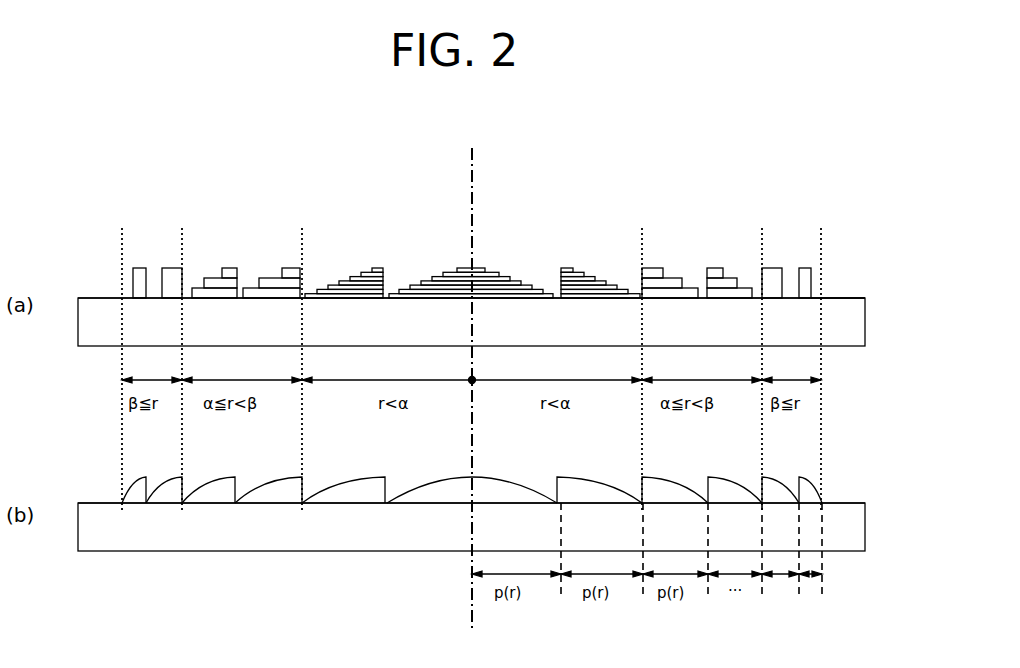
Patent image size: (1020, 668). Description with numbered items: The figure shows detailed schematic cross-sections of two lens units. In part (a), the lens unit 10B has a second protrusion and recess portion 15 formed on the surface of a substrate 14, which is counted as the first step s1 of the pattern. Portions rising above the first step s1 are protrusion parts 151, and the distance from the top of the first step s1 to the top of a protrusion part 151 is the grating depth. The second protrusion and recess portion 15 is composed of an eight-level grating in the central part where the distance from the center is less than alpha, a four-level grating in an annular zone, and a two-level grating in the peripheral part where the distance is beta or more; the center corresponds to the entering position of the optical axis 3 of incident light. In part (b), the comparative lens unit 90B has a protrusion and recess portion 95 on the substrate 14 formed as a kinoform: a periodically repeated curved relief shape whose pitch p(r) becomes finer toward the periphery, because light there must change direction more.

The optical axis 3 is at (473, 150).
The lens unit 10B is at (58, 265).
The lens unit 90B is at (69, 476).
The substrate 14 is at (866, 320).
The second protrusion and recess portion 15 is at (857, 266).
The protrusion and recess portion 95 is at (860, 472).
The protrusion part 151 is at (172, 267).
The first step s1 is at (833, 284).